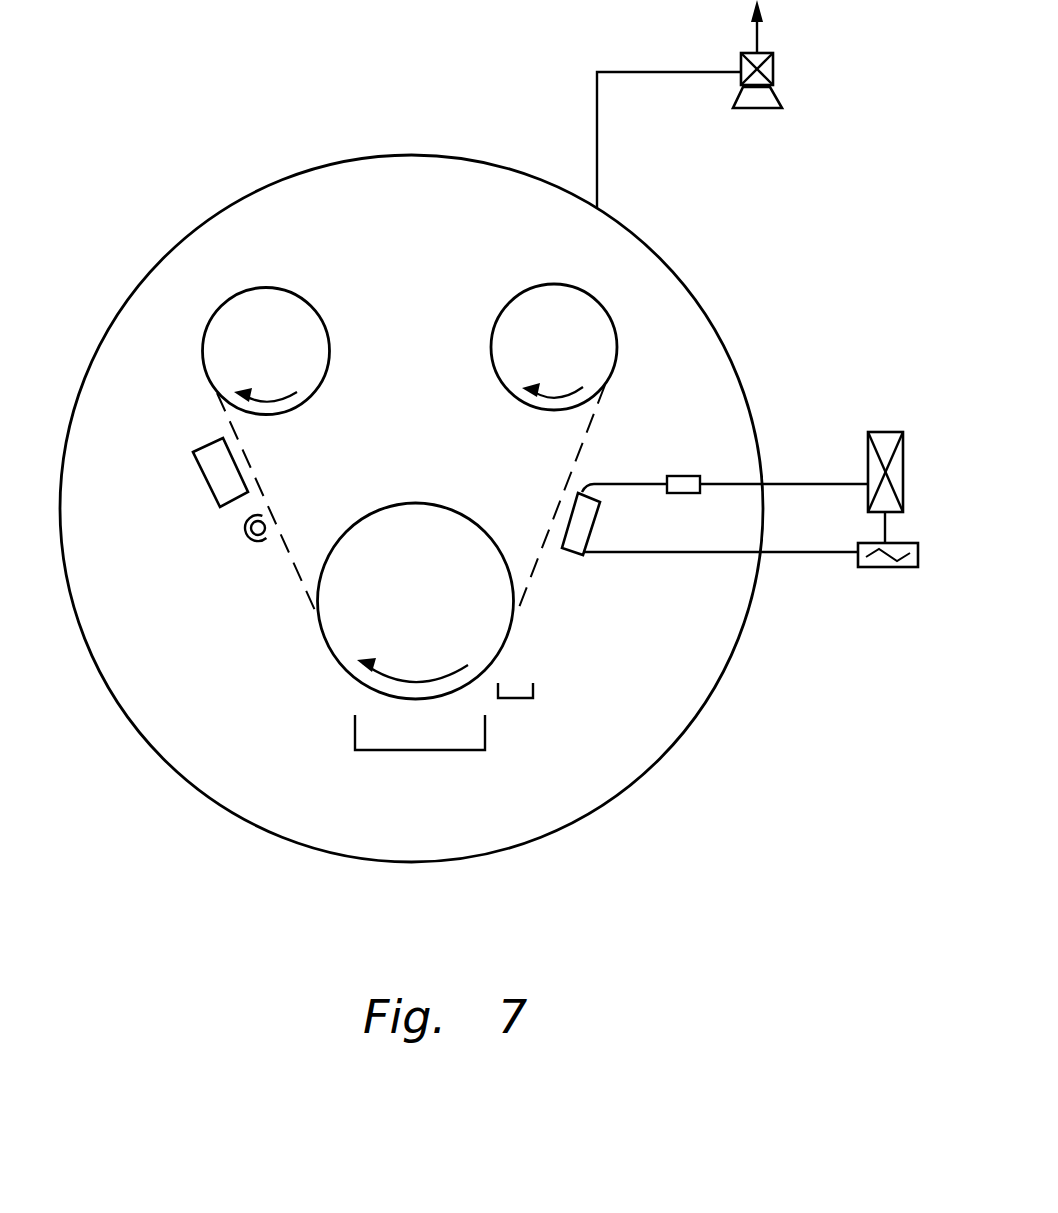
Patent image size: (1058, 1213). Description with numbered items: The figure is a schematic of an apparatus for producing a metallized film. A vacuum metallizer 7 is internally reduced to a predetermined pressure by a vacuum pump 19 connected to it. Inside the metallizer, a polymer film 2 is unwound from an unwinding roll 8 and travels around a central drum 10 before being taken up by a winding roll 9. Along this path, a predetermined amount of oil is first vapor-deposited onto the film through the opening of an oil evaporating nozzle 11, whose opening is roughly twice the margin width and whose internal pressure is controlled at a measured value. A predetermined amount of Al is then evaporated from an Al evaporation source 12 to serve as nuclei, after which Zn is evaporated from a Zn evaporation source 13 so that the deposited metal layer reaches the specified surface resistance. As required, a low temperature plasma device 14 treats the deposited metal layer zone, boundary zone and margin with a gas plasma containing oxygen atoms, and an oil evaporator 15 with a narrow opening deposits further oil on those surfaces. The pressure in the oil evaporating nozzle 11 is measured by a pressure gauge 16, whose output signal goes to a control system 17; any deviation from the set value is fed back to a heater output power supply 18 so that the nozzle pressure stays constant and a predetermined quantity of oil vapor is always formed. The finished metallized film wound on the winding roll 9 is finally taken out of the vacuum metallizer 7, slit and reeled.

The polymer film 2 is at (587, 445).
The vacuum metallizer 7 is at (692, 292).
The unwinding roll 8 is at (570, 367).
The winding roll 9 is at (282, 373).
The cooling drum 10 is at (440, 627).
The oil evaporating nozzle 11 is at (570, 558).
The Al evaporation source 12 is at (517, 697).
The Zn evaporation source 13 is at (418, 740).
The low temperature plasma device 14 is at (245, 532).
The oil evaporator 15 is at (215, 480).
The pressure gauge 16 is at (677, 493).
The control system 17 is at (885, 432).
The heater output power supply 18 is at (885, 567).
The vacuum pump 19 is at (773, 72).